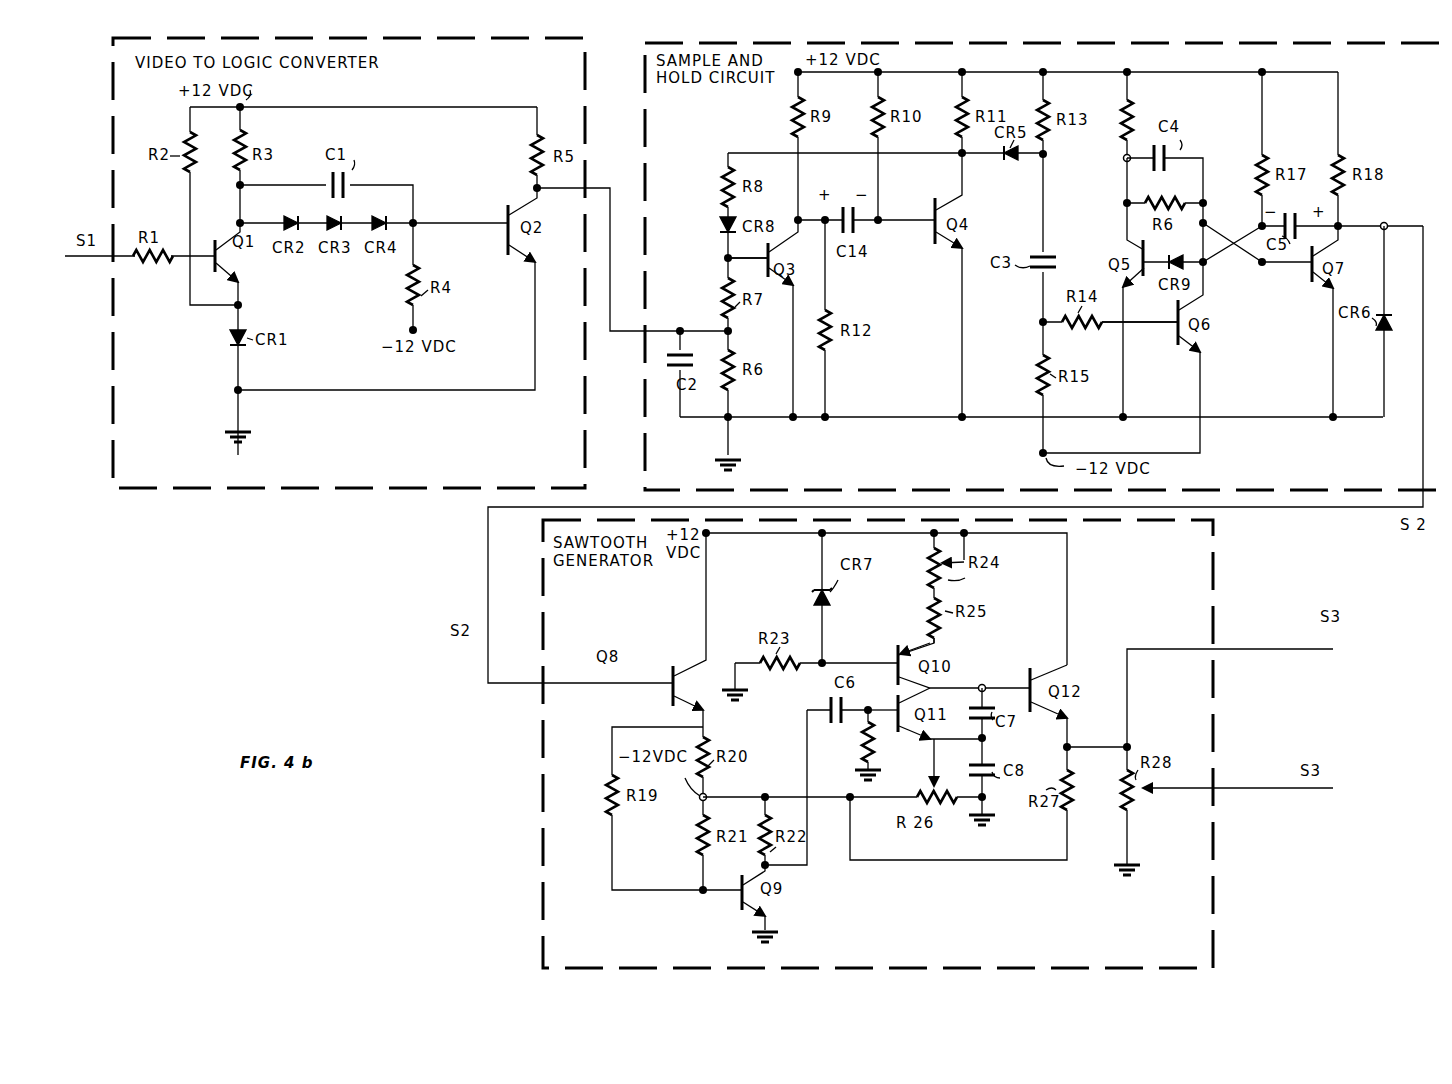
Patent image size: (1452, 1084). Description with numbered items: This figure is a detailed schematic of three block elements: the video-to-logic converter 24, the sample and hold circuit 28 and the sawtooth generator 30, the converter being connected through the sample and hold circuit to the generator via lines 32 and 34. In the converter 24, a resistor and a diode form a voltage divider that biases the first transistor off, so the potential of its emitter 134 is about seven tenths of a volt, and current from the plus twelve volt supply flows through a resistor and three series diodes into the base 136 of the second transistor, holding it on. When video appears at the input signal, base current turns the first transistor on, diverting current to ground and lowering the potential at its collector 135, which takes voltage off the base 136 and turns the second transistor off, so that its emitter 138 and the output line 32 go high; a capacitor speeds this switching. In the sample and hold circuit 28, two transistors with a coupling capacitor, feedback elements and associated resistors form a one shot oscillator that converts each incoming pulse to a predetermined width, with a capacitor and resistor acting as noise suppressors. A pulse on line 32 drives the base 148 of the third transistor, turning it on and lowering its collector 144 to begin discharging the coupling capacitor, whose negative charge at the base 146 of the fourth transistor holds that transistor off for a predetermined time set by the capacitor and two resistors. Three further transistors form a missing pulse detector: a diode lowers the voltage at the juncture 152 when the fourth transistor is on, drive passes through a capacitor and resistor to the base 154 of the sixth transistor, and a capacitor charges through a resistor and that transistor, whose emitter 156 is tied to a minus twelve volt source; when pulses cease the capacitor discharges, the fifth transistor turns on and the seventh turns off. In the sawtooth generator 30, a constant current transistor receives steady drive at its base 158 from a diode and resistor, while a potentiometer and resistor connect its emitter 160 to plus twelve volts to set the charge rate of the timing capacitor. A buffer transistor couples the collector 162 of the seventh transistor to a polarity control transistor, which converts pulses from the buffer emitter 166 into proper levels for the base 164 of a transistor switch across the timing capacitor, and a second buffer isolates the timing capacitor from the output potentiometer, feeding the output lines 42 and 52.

The video-to-logic converter 24 is at (322, 502).
The sample and hold circuit 28 is at (644, 64).
The sawtooth generator 30 is at (540, 776).
The line 32 is at (600, 186).
The line 34 is at (1362, 504).
The sawtooth output line S3 42 is at (1272, 644).
The potentiometer input line S3 52 is at (1236, 772).
The emitter of Q1 134 is at (218, 276).
The collector of Q1 135 is at (230, 235).
The base of Q2 136 is at (506, 245).
The emitter of Q2 138 is at (526, 206).
The collector of Q3 144 is at (782, 244).
The base of Q4 146 is at (930, 242).
The base of Q3 148 is at (760, 282).
The juncture 152 is at (1048, 157).
The base of Q6 154 is at (1176, 336).
The emitter of Q6 156 is at (1188, 350).
The base of Q10 158 is at (896, 648).
The emitter of Q10 160 is at (920, 652).
The collector of Q7 162 is at (1333, 247).
The base of Q11 164 is at (894, 712).
The emitter of Q8 166 is at (684, 698).